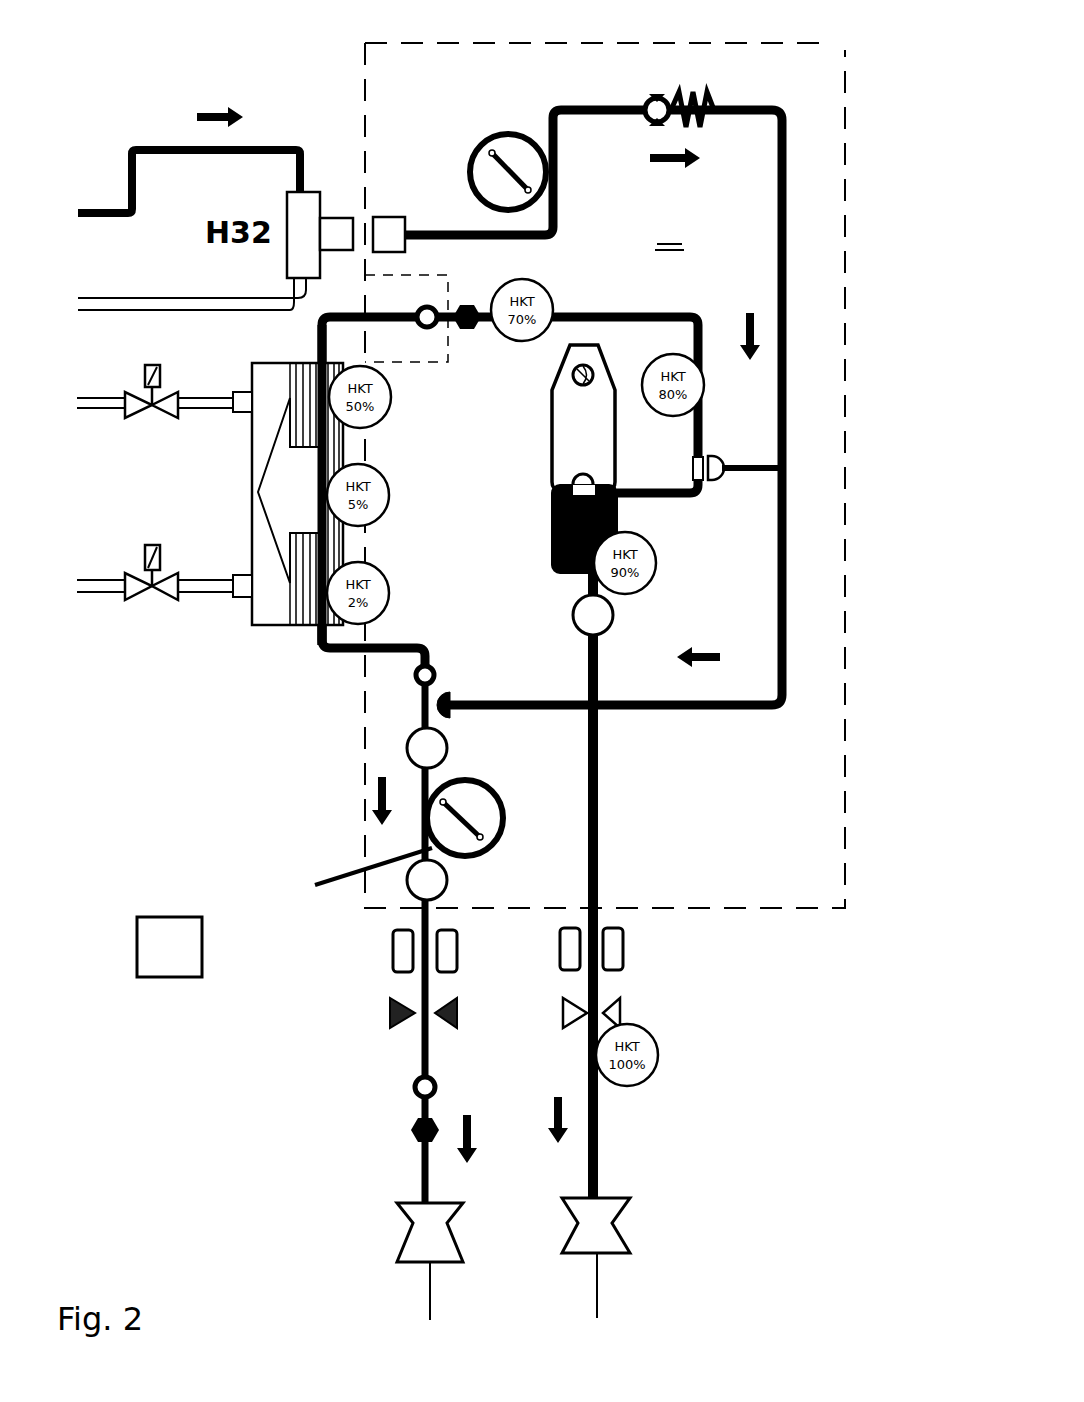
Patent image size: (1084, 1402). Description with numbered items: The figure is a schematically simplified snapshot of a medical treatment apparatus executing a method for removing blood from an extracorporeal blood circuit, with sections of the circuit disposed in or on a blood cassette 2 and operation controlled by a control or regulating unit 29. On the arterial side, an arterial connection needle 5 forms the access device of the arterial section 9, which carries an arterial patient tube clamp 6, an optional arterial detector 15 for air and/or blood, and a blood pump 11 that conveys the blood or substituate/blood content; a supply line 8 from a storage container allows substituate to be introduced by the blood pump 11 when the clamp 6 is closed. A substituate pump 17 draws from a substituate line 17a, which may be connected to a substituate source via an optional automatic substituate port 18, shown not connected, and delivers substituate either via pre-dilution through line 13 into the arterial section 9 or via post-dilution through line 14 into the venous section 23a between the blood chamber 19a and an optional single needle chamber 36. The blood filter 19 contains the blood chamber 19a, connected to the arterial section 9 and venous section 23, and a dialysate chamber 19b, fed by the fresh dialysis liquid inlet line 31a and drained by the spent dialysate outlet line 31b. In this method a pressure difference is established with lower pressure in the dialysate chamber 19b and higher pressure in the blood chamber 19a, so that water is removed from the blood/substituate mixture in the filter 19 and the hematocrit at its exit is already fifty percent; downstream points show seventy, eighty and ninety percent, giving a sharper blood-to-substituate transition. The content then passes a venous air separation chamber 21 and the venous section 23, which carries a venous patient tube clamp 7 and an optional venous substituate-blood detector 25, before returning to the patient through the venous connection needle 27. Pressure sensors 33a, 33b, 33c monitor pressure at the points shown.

The blood cassette 2 is at (810, 192).
The arterial connection needle 5 is at (387, 1274).
The arterial patient tube clamp 6 is at (457, 1013).
The venous patient tube clamp 7 is at (620, 1010).
The supply line 8 is at (320, 886).
The arterial section 9 is at (419, 1167).
The blood pump 11 is at (475, 795).
The pre-dilution line 13 is at (440, 692).
The post-dilution line 14 is at (745, 462).
The arterial detector 15 is at (446, 950).
The substituate pump 17 is at (508, 134).
The substituate line 17a is at (775, 100).
The substituate port 18 is at (386, 235).
The blood filter 19 is at (319, 540).
The blood chamber 19a is at (333, 452).
The dialysate chamber 19b is at (283, 623).
The venous air separation chamber 21 is at (620, 520).
The venous section 23 is at (598, 1123).
The venous section 23a is at (665, 312).
The venous substituate-blood detector 25 is at (612, 950).
The venous connection needle 27 is at (637, 1277).
The control or regulating unit 29 is at (169, 947).
The fresh dialysis liquid inlet line 31a is at (85, 410).
The spent dialysate outlet line 31b is at (85, 600).
The pressure sensor 33a is at (442, 885).
The pressure sensor 33b is at (613, 618).
The pressure sensor 33c is at (406, 748).
The single needle chamber 36 is at (565, 418).